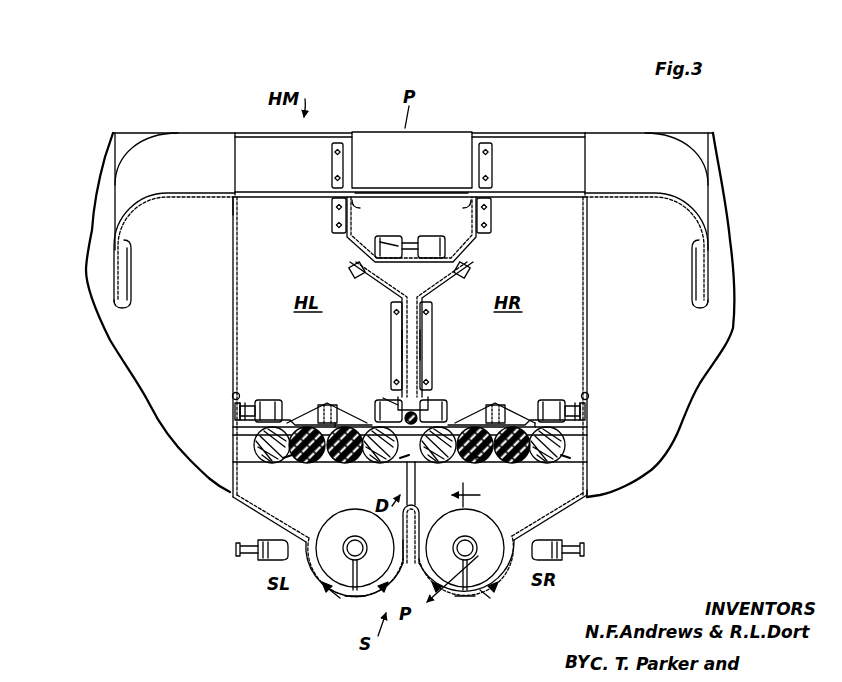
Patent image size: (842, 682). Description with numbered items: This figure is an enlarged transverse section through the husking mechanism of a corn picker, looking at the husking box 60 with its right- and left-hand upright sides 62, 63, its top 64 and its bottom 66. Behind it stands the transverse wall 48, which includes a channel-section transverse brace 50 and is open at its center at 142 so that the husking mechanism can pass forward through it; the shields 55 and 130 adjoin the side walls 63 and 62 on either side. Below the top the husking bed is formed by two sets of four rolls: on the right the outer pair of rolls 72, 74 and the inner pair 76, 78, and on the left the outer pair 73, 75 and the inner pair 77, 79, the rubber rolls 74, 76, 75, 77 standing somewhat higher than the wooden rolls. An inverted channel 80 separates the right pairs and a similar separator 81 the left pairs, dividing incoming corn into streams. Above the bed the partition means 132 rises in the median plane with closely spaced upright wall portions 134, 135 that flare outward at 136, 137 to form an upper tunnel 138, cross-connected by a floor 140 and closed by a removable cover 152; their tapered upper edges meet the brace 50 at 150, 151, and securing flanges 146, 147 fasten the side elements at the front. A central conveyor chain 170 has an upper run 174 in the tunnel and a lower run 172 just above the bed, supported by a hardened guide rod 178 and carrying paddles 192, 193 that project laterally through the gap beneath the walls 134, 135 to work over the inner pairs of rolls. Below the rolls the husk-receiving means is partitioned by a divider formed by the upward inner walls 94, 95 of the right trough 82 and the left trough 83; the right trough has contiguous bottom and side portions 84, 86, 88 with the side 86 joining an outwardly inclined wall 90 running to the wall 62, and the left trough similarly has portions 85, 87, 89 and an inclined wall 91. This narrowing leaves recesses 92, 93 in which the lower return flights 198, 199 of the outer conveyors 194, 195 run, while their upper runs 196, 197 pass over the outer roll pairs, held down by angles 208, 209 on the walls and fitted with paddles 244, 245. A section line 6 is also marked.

The transverse wall 48 is at (733, 334).
The shield 55 is at (182, 142).
The shield 130 is at (680, 150).
The top 64 is at (275, 190).
The transverse brace 50 is at (532, 142).
The meeting point of left upper edge 151 is at (338, 140).
The meeting point of right upper edge 150 is at (488, 142).
The husking box 60 is at (195, 336).
The left-hand upright side 63 is at (230, 296).
The central opening 142 is at (237, 215).
The right-hand upright side 62 is at (590, 341).
The upper tunnel 138 is at (414, 205).
The removable cover 152 is at (372, 192).
The securing flange 147 is at (332, 216).
The securing flange 146 is at (491, 218).
The paddles 193 is at (378, 246).
The paddles 192 is at (446, 248).
The upper run 174 is at (420, 240).
The conveyor chain 170 is at (393, 229).
The left upper wall portion 137 is at (350, 257).
The right upper wall portion 136 is at (476, 258).
The floor 140 is at (375, 281).
The partition means 132 is at (455, 297).
The left upright wall portion 135 is at (402, 341).
The right upright wall portion 134 is at (432, 341).
The lower run 172 is at (425, 410).
The guide rod 178 is at (396, 406).
The husking roll 75 is at (292, 418).
The husking roll 76 is at (486, 418).
The separator 81 is at (327, 402).
The inverted channel 80 is at (500, 387).
The husking roll 77 is at (338, 418).
The husking roll 74 is at (535, 402).
The husking roll 73 is at (270, 462).
The husking roll 79 is at (378, 462).
The husking roll 78 is at (436, 462).
The husking roll 72 is at (555, 448).
The paddles 245 is at (277, 400).
The paddles 244 is at (553, 394).
The upper run 197 is at (238, 407).
The outer conveyor 195 is at (232, 414).
The angle 209 is at (240, 393).
The upper run 196 is at (583, 408).
The outer conveyor 194 is at (590, 414).
The angle 208 is at (587, 393).
The inclined wall 91 is at (243, 506).
The inclined wall 90 is at (560, 521).
The bottom 66 is at (588, 498).
The side wall portion 87 is at (312, 569).
The side wall portion 86 is at (514, 563).
The inner side wall portion 88 is at (413, 571).
The inner side wall portion 89 is at (404, 579).
The inner side wall 95 is at (400, 534).
The inner side wall 94 is at (424, 536).
The trough 83 is at (342, 601).
The bottom portion 85 is at (356, 599).
The bottom portion 84 is at (464, 601).
The trough 82 is at (482, 601).
The section line 6 is at (458, 551).
The recess 93 is at (285, 559).
The lower return flight 199 is at (236, 550).
The recess 92 is at (545, 563).
The lower return flight 198 is at (584, 553).